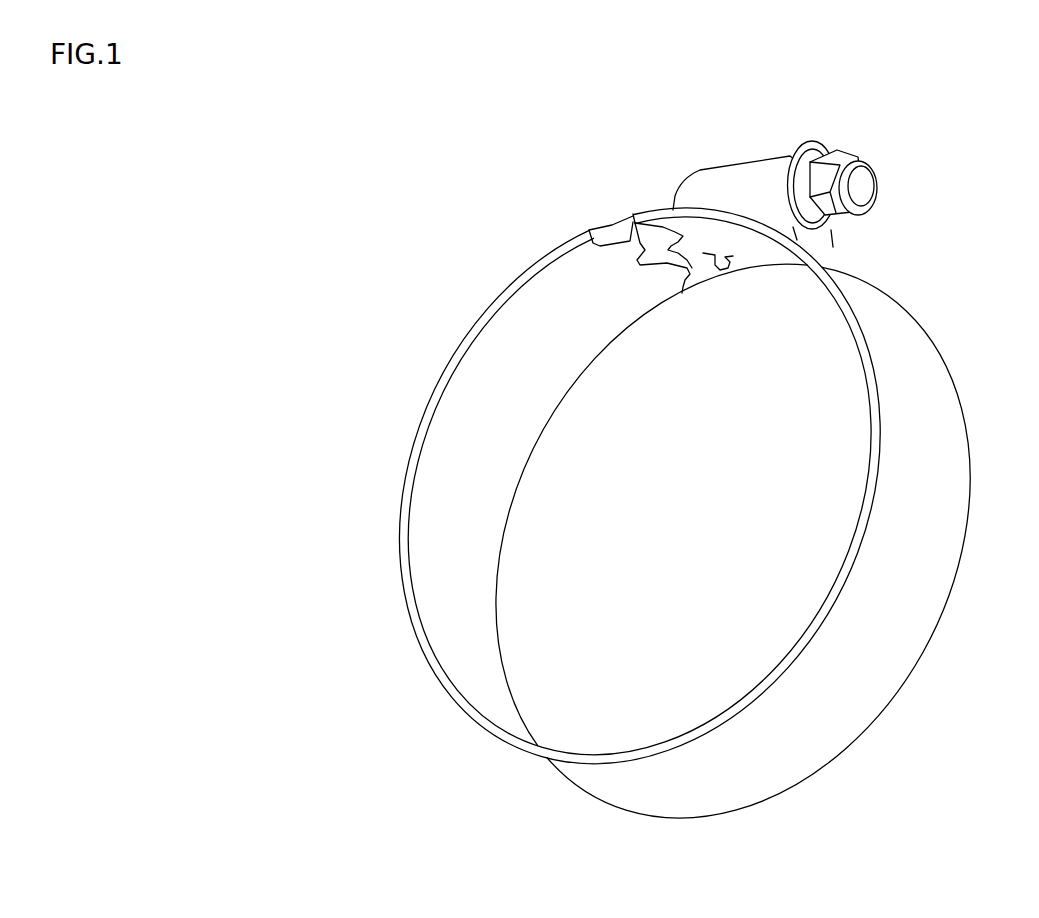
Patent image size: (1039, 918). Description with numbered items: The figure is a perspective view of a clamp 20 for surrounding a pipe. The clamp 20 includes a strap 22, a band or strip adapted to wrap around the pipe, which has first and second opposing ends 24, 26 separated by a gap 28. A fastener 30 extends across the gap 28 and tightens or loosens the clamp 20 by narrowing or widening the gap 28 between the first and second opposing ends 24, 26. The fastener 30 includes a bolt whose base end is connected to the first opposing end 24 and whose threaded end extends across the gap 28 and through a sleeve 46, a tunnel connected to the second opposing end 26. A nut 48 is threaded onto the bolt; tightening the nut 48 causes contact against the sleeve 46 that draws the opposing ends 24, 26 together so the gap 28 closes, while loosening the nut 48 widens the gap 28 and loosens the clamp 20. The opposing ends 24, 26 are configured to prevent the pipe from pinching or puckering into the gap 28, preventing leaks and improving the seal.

The clamp 20 is at (942, 277).
The strap 22 is at (938, 363).
The first opposing end 24 is at (635, 265).
The second opposing end 26 is at (700, 253).
The gap 28 is at (621, 216).
The fastener 30 is at (865, 166).
The sleeve 46 is at (727, 163).
The nut 48 is at (830, 147).